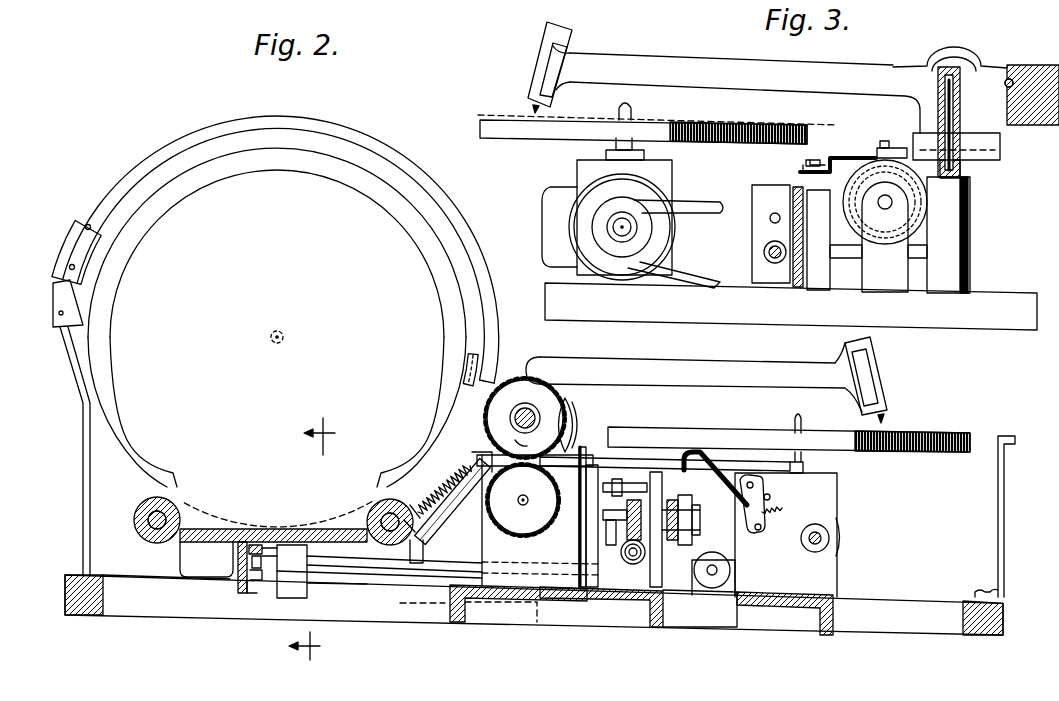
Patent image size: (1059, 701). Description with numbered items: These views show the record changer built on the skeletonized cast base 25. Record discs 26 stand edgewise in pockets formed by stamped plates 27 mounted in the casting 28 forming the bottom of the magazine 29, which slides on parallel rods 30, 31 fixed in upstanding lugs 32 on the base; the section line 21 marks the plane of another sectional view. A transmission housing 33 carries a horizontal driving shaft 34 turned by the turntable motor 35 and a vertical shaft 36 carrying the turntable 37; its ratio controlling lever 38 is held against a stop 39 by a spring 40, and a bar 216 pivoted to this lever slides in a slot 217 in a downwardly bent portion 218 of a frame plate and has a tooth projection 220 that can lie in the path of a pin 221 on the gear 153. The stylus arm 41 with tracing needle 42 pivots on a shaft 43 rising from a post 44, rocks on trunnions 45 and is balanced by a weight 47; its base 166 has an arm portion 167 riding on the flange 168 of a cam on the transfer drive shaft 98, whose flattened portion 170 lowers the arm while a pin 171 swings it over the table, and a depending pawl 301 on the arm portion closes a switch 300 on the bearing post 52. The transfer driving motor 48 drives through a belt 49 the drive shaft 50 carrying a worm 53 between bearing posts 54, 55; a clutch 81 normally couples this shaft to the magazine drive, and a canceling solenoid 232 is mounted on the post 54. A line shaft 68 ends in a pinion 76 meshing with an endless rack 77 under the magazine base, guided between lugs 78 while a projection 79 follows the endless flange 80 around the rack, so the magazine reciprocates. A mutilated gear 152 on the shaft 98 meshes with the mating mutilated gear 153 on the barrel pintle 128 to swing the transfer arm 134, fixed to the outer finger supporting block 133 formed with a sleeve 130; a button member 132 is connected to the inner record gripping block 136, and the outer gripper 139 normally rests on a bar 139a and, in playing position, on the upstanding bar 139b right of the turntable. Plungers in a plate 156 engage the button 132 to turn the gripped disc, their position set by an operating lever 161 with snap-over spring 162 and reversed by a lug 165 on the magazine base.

In FIG. 2, the section line 21 is at (324, 539).
In FIG. 2, the base 25 is at (985, 636).
In FIG. 3, the base 25 is at (953, 328).
In FIG. 2, the record discs 26 is at (338, 167).
In FIG. 3, the record discs 26 is at (822, 124).
In FIG. 2, the stamped plates 27 is at (410, 240).
In FIG. 2, the casting 28 is at (273, 553).
In FIG. 2, the magazine 29 is at (107, 428).
In FIG. 2, the rod 30 is at (395, 510).
In FIG. 2, the rod 31 is at (136, 512).
In FIG. 2, the upstanding lugs 32 is at (142, 556).
In FIG. 2, the housing 33 is at (838, 480).
In FIG. 3, the housing 33 is at (672, 180).
In FIG. 2, the horizontal driving shaft 34 is at (824, 532).
In FIG. 3, the turntable motor 35 is at (556, 185).
In FIG. 2, the vertical shaft 36 is at (803, 460).
In FIG. 3, the vertical shaft 36 is at (633, 147).
In FIG. 2, the turntable 37 is at (958, 436).
In FIG. 3, the turntable 37 is at (735, 144).
In FIG. 2, the ratio controlling lever 38 is at (742, 476).
In FIG. 2, the stop 39 is at (771, 497).
In FIG. 2, the spring 40 is at (775, 520).
In FIG. 2, the stylus arm 41 is at (738, 365).
In FIG. 3, the stylus arm 41 is at (690, 62).
In FIG. 2, the tracing needle 42 is at (885, 418).
In FIG. 3, the tracing needle 42 is at (530, 102).
In FIG. 3, the shaft 43 is at (961, 174).
In FIG. 3, the post 44 is at (970, 210).
In FIG. 3, the trunnions 45 is at (1001, 145).
In FIG. 3, the weight 47 is at (1030, 75).
In FIG. 2, the transfer driving motor 48 is at (841, 540).
In FIG. 3, the transfer driving motor 48 is at (670, 236).
In FIG. 3, the belt 49 is at (718, 210).
In FIG. 2, the drive shaft 50 is at (633, 565).
In FIG. 3, the drive shaft 50 is at (722, 281).
In FIG. 3, the bearing post 52 is at (755, 198).
In FIG. 2, the worm 53 is at (632, 543).
In FIG. 2, the bearing post 54 is at (657, 472).
In FIG. 2, the bearing post 55 is at (595, 468).
In FIG. 2, the line shaft 68 is at (436, 560).
In FIG. 2, the pinion 76 is at (261, 545).
In FIG. 2, the endless rack 77 is at (292, 571).
In FIG. 2, the lugs 78 is at (290, 548).
In FIG. 2, the projection 79 is at (244, 545).
In FIG. 2, the endless flange 80 is at (247, 590).
In FIG. 2, the clutch 81 is at (597, 567).
In FIG. 2, the transfer drive shaft 98 is at (524, 505).
In FIG. 3, the transfer drive shaft 98 is at (885, 202).
In FIG. 2, the barrel pintle 128 is at (520, 414).
In FIG. 2, the sleeve 130 is at (504, 435).
In FIG. 2, the button member 132 is at (579, 424).
In FIG. 2, the outer finger supporting block 133 is at (492, 382).
In FIG. 2, the arm 134 is at (425, 182).
In FIG. 2, the inner record gripping block 136 is at (462, 372).
In FIG. 2, the outer gripper 139 is at (90, 258).
In FIG. 2, the bar 139a is at (76, 372).
In FIG. 2, the upstanding bar 139b is at (1005, 505).
In FIG. 2, the mutilated gear 152 is at (520, 520).
In FIG. 2, the mutilated gear 153 is at (570, 410).
In FIG. 2, the plate 156 is at (458, 517).
In FIG. 2, the operating lever 161 is at (412, 545).
In FIG. 2, the spring 162 is at (441, 484).
In FIG. 2, the lug 165 is at (468, 602).
In FIG. 3, the base 166 is at (1001, 160).
In FIG. 3, the arm portion 167 is at (862, 150).
In FIG. 3, the flange 168 is at (862, 232).
In FIG. 3, the flattened portion 170 is at (942, 166).
In FIG. 3, the pin 171 is at (877, 137).
In FIG. 2, the bar 216 is at (692, 458).
In FIG. 2, the slot 217 is at (712, 552).
In FIG. 2, the downwardly bent portion 218 is at (582, 450).
In FIG. 2, the tooth projection 220 is at (510, 452).
In FIG. 2, the pin 221 is at (538, 388).
In FIG. 2, the solenoid 232 is at (692, 516).
In FIG. 3, the switch 300 is at (810, 170).
In FIG. 3, the depending pawl 301 is at (822, 160).